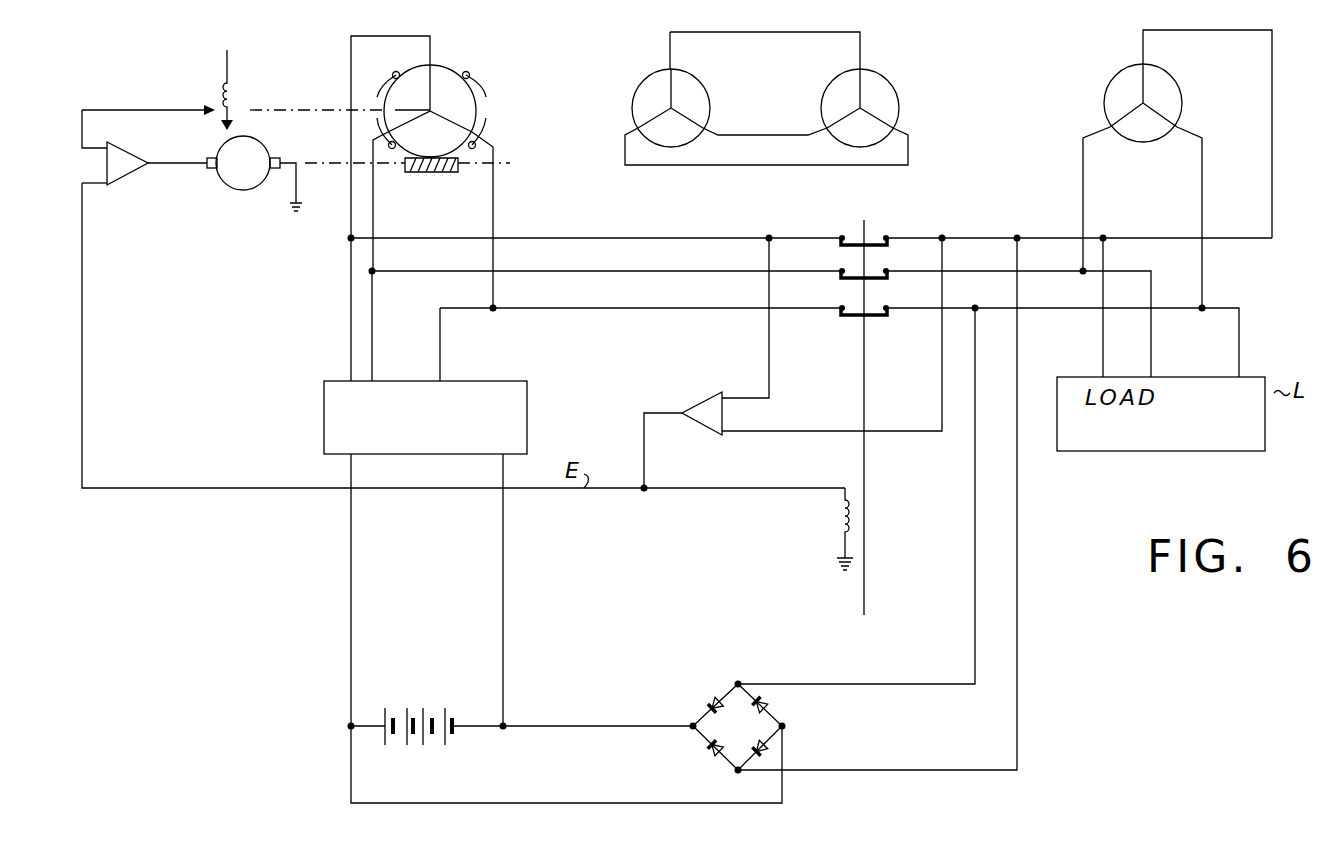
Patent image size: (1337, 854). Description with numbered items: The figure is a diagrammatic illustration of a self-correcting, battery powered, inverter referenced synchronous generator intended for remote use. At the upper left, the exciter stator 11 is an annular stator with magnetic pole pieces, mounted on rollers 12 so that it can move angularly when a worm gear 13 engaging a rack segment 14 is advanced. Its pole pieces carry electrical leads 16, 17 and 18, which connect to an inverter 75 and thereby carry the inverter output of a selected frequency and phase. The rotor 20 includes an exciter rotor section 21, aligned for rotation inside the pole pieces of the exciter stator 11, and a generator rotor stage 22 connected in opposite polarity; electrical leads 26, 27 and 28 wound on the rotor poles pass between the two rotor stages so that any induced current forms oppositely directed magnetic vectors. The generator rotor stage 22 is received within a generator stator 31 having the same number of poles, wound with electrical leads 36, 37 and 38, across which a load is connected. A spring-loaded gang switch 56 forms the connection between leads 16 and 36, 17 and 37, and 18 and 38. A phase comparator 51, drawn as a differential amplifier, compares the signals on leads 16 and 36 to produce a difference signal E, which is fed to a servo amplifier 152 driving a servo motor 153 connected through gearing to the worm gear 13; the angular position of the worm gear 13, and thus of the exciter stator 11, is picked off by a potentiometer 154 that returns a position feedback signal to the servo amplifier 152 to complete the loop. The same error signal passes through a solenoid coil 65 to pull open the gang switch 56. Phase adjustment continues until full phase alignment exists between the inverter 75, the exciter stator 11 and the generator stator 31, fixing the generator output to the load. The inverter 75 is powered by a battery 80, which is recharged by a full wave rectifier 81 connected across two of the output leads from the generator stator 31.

The exciter stator 11 is at (447, 67).
The rollers 12 is at (432, 110).
The worm gear 13 is at (447, 172).
The rack segment 14 is at (433, 158).
The electrical lead 16 is at (350, 267).
The electrical lead 17 is at (374, 216).
The electrical lead 18 is at (492, 194).
The rotor 20 is at (769, 32).
The exciter rotor section 21 is at (698, 85).
The generator rotor stage 22 is at (880, 82).
The electrical lead 26 is at (670, 67).
The electrical lead 27 is at (766, 135).
The electrical lead 28 is at (760, 152).
The generator stator 31 is at (1115, 82).
The electrical lead 36 is at (1272, 93).
The electrical lead 37 is at (1083, 179).
The electrical lead 38 is at (1202, 191).
The amplifier 51 is at (713, 396).
The spring-loaded gang switch 56 is at (871, 316).
The solenoid coil 65 is at (842, 532).
The inverter 75 is at (527, 406).
The battery 80 is at (422, 708).
The full wave rectifier 81 is at (724, 692).
The servo amplifier 152 is at (110, 186).
The servo motor 153 is at (250, 190).
The potentiometer 154 is at (231, 96).